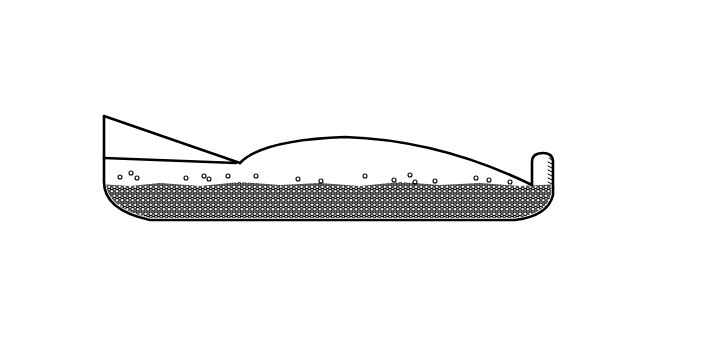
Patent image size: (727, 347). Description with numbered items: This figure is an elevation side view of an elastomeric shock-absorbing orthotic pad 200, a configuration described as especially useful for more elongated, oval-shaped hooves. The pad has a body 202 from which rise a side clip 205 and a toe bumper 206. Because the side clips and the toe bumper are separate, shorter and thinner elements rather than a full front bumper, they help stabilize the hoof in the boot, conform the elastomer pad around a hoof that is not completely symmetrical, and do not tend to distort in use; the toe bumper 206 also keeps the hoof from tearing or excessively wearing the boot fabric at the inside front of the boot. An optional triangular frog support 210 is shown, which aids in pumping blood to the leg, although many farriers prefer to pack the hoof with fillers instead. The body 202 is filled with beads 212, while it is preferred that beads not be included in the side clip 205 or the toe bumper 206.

The orthotic pad 200 is at (214, 68).
The body 202 is at (450, 172).
The side clip 205 is at (347, 137).
The toe bumper 206 is at (545, 153).
The triangular frog support 210 is at (115, 143).
The granular contents 212 is at (350, 222).